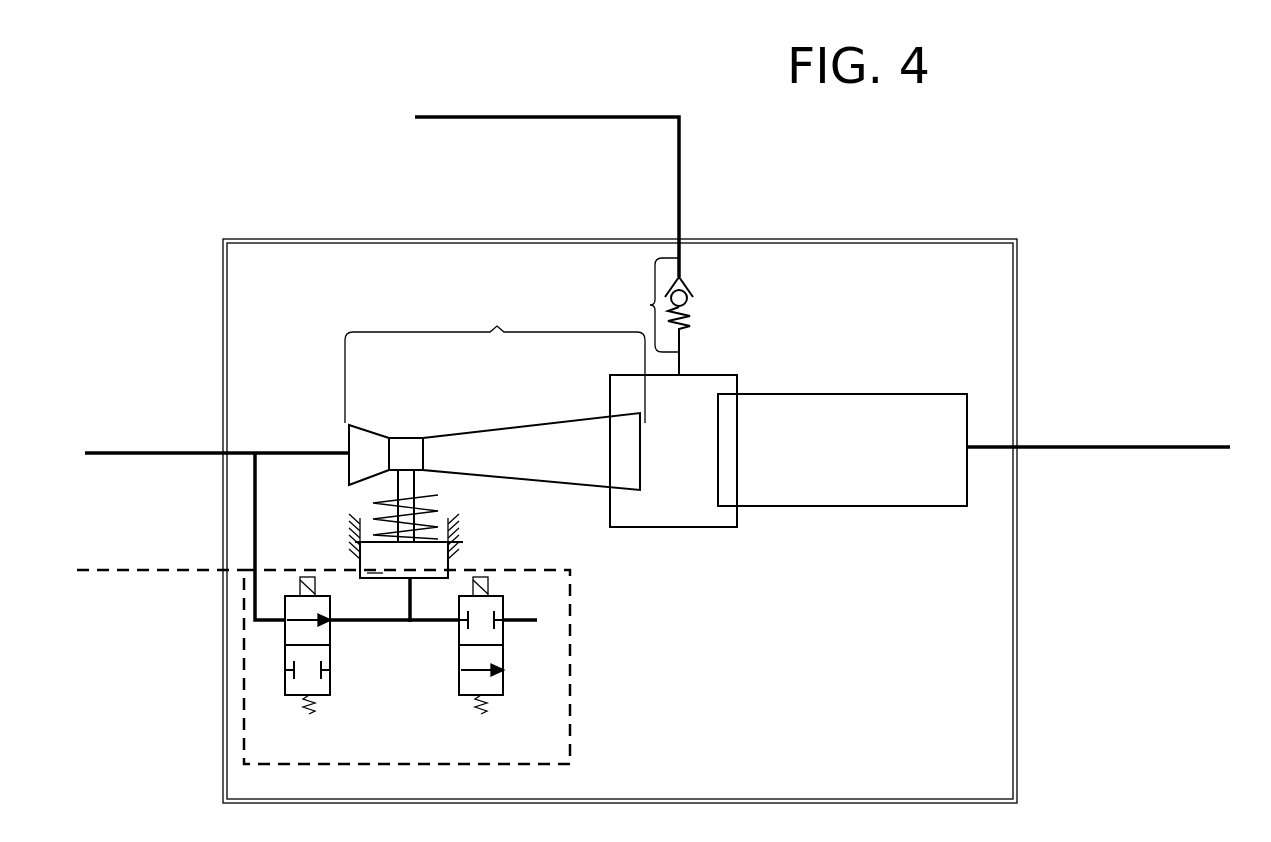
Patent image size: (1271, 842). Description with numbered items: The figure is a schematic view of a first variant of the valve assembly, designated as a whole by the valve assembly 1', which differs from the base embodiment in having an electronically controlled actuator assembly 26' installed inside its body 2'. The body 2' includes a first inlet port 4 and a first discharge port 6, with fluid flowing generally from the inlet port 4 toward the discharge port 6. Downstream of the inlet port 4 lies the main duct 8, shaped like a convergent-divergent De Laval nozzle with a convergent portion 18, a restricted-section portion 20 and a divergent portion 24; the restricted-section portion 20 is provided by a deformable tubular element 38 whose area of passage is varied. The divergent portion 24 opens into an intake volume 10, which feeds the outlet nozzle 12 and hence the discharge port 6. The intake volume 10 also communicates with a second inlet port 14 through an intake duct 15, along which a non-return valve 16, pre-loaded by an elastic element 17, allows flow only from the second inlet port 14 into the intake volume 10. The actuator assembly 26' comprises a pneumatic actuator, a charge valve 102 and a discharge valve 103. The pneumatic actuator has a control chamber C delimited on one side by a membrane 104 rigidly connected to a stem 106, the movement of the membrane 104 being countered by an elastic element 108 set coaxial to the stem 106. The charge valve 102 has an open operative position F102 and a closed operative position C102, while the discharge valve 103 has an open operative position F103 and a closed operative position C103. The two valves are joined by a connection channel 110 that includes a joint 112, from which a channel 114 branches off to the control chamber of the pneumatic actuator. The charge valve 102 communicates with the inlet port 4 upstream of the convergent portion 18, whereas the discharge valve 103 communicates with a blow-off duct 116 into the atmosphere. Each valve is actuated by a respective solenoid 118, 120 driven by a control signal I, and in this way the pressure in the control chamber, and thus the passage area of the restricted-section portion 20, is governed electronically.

The valve assembly 1' is at (1041, 122).
The body 2' is at (669, 503).
The first inlet port 4 is at (223, 445).
The first discharge port 6 is at (1017, 447).
The main duct 8 is at (465, 454).
The intake volume 10 is at (668, 513).
The outlet nozzle 12 is at (862, 402).
The second inlet port 14 is at (679, 242).
The intake duct 15 is at (646, 305).
The non-return valve 16 is at (704, 302).
The elastic element 17 is at (690, 322).
The convergent portion 18 is at (364, 465).
The restricted-section portion 20 is at (427, 456).
The divergent portion 24 is at (572, 470).
The actuator assembly 26' is at (475, 667).
The deformable tubular element 38 is at (400, 437).
The charge valve 102 is at (334, 634).
The discharge valve 103 is at (554, 637).
The membrane 104 is at (433, 543).
The stem 106 is at (380, 497).
The elastic element 108 is at (408, 477).
The connection channel 110 is at (443, 623).
The joint 112 is at (410, 624).
The channel 114 is at (412, 610).
The blow-off duct 116 is at (528, 607).
The solenoid 118 is at (318, 580).
The solenoid 120 is at (490, 590).
The closed operative position C102 is at (285, 677).
The open operative position F102 is at (323, 633).
The closed operative position C103 is at (495, 635).
The open operative position F103 is at (460, 680).
The control signal I is at (160, 577).